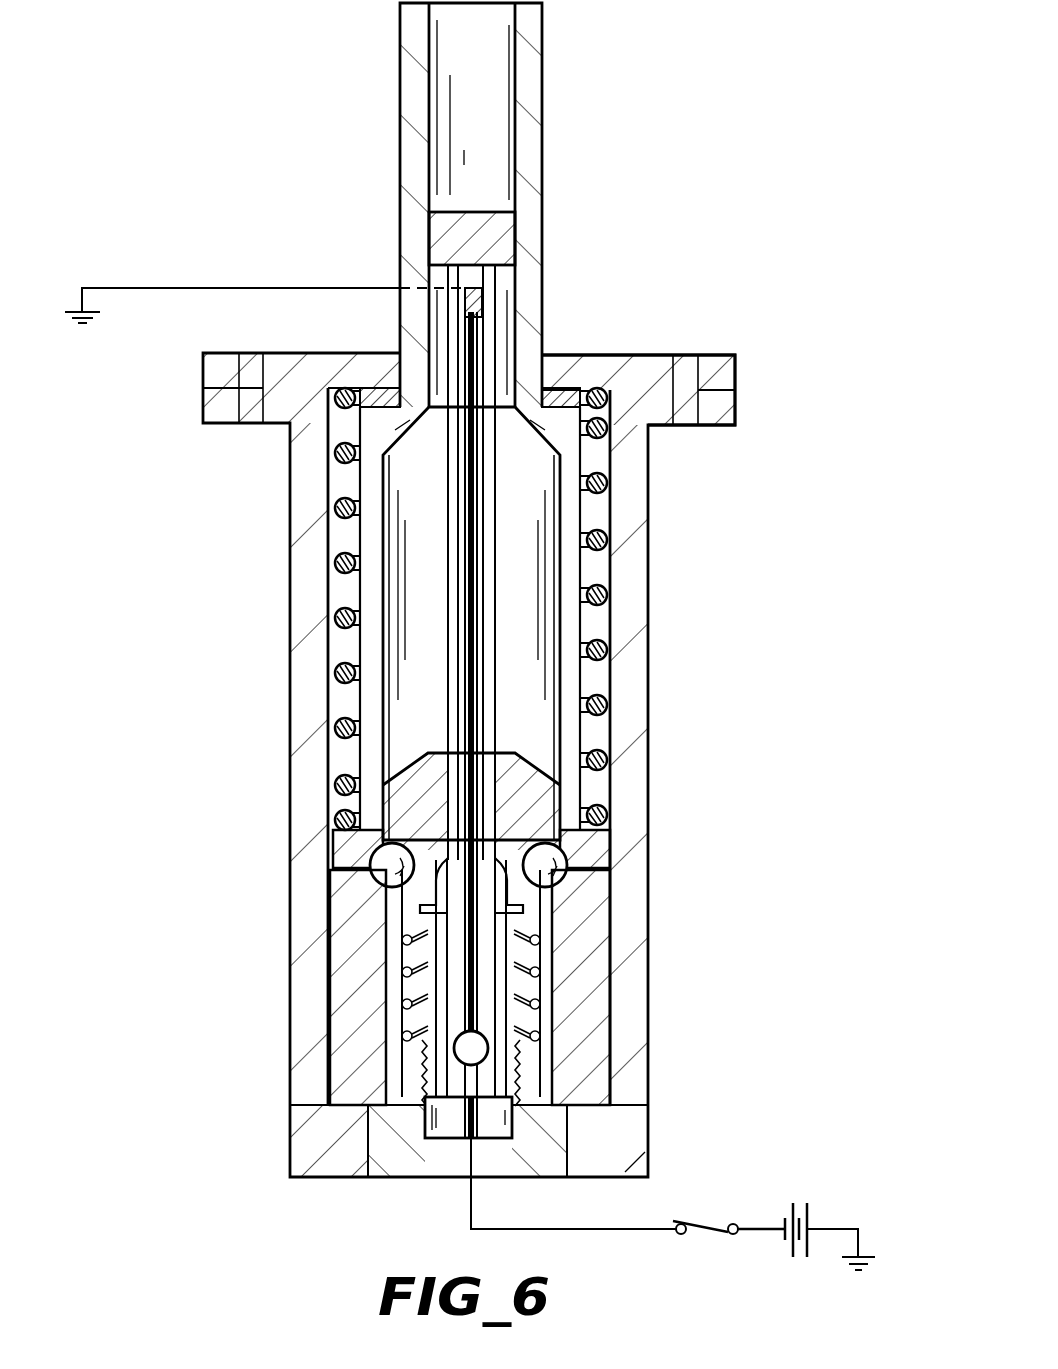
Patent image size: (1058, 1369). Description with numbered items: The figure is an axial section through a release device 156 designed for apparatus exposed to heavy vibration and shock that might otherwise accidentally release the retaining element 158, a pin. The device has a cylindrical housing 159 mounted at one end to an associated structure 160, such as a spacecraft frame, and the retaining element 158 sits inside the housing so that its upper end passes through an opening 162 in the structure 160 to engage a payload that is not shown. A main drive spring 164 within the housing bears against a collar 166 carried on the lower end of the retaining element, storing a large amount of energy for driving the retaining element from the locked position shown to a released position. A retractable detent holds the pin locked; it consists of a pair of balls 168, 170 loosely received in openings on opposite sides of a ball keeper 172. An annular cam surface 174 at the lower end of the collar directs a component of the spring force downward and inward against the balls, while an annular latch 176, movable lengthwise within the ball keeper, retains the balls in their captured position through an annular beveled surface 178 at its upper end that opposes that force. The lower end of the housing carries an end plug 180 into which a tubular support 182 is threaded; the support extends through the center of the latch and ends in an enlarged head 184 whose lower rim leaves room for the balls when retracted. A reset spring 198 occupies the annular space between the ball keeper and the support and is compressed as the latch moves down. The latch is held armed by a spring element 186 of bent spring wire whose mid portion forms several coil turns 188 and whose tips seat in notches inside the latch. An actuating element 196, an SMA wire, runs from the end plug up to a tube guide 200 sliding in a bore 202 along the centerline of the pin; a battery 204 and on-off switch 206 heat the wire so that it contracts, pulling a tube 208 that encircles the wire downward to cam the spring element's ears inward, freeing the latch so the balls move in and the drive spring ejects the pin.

The release device 156 is at (153, 1128).
The retaining element 158 is at (545, 165).
The cylindrical housing 159 is at (302, 503).
The structure 160 is at (640, 375).
The opening 162 is at (532, 358).
The main drive spring 164 is at (340, 623).
The collar 166 is at (572, 623).
The ball 168 is at (385, 855).
The ball 170 is at (562, 860).
The ball keeper 172 is at (335, 1103).
The annular cam surface 174 is at (398, 815).
The annular latch 176 is at (405, 912).
The annular beveled surface 178 is at (542, 907).
The end plug 180 is at (382, 1135).
The tubular support 182 is at (410, 962).
The enlarged head 184 is at (565, 848).
The spring element 186 is at (500, 972).
The coil turns 188 is at (525, 1052).
The actuating element 196 is at (455, 1137).
The reset spring 198 is at (412, 1042).
The tube guide 200 is at (440, 244).
The bore 202 is at (436, 160).
The battery 204 is at (810, 1218).
The on-off switch 206 is at (706, 1222).
The tube 208 is at (500, 520).